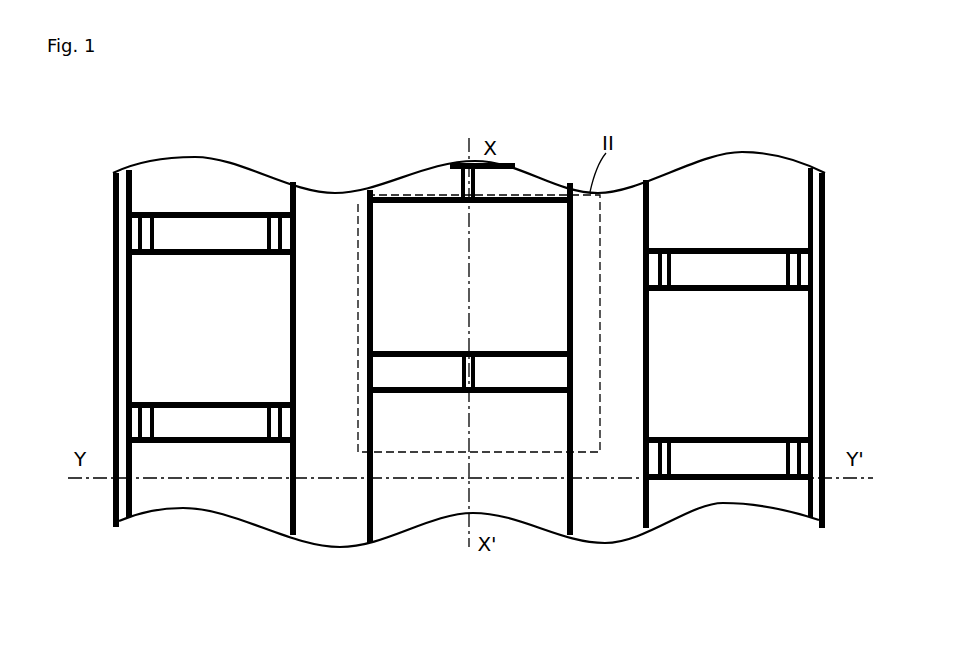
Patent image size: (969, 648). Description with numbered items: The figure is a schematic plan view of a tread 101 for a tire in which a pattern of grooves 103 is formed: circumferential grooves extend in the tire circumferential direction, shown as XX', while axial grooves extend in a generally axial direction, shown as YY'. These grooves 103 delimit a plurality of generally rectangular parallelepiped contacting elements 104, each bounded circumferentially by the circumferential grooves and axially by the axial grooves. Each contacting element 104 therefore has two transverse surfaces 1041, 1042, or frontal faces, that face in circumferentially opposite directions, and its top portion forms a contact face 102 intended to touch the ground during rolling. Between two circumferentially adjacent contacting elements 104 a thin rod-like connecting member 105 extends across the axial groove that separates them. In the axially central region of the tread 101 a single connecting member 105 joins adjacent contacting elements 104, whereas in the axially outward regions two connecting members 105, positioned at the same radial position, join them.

The tread 101 is at (190, 128).
The contact face 102 is at (153, 178).
The grooves 103 is at (175, 228).
The contacting element 104 is at (118, 187).
The transverse surface 1041 is at (205, 212).
The transverse surface 1042 is at (212, 247).
The connecting member 105 is at (155, 243).